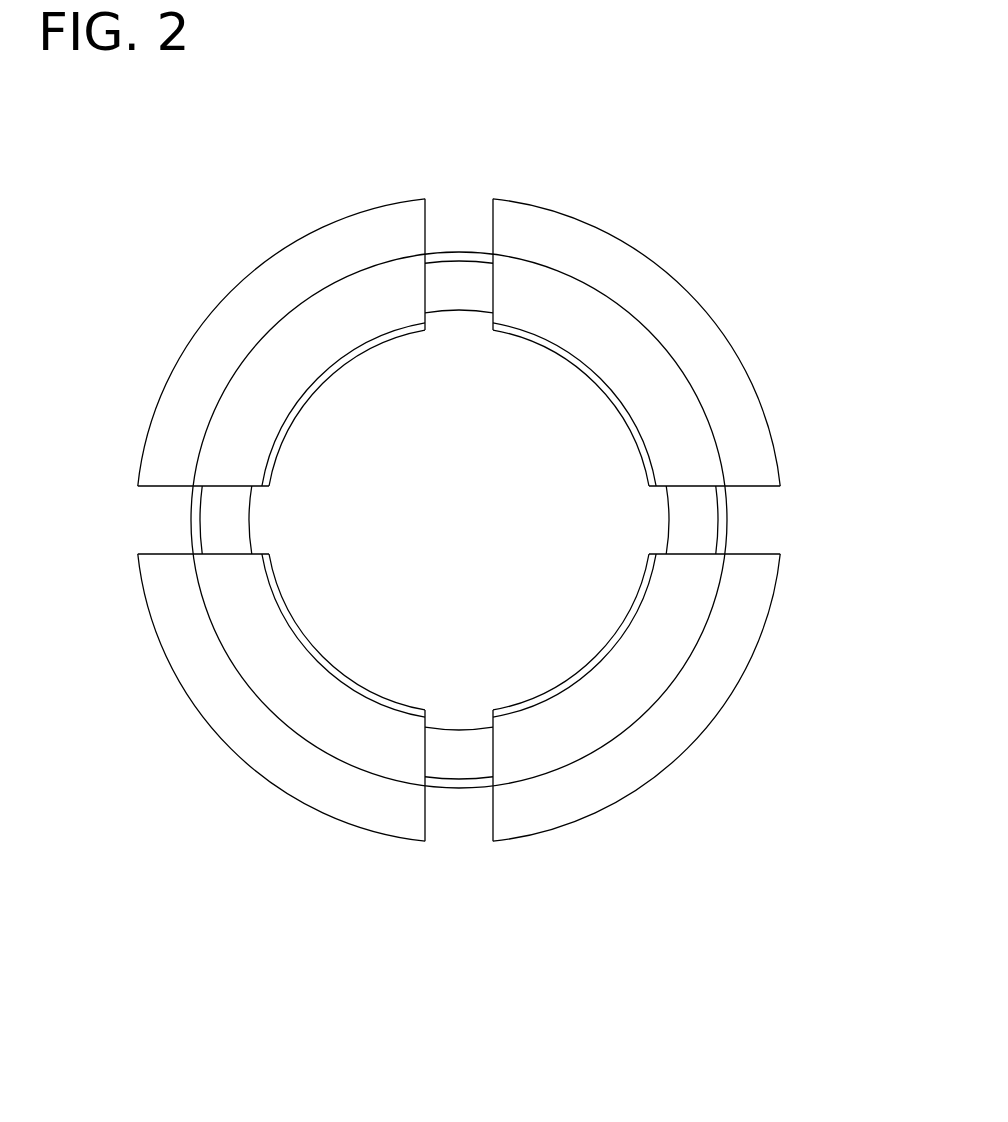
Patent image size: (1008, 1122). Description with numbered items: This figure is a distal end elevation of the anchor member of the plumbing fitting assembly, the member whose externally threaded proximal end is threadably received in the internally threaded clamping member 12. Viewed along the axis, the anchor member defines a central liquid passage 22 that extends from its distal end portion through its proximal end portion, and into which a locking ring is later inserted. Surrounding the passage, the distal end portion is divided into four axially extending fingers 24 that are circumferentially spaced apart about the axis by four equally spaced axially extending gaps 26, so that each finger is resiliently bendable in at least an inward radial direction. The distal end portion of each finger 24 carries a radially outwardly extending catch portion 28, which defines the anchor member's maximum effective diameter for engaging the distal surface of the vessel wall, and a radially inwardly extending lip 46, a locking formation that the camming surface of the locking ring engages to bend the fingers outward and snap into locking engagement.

The clamping member 12 is at (465, 596).
The liquid passage 22 is at (443, 522).
The fingers 24 is at (262, 260).
The gaps 26 is at (475, 238).
The catch portion 28 is at (215, 357).
The lips 46 is at (327, 377).